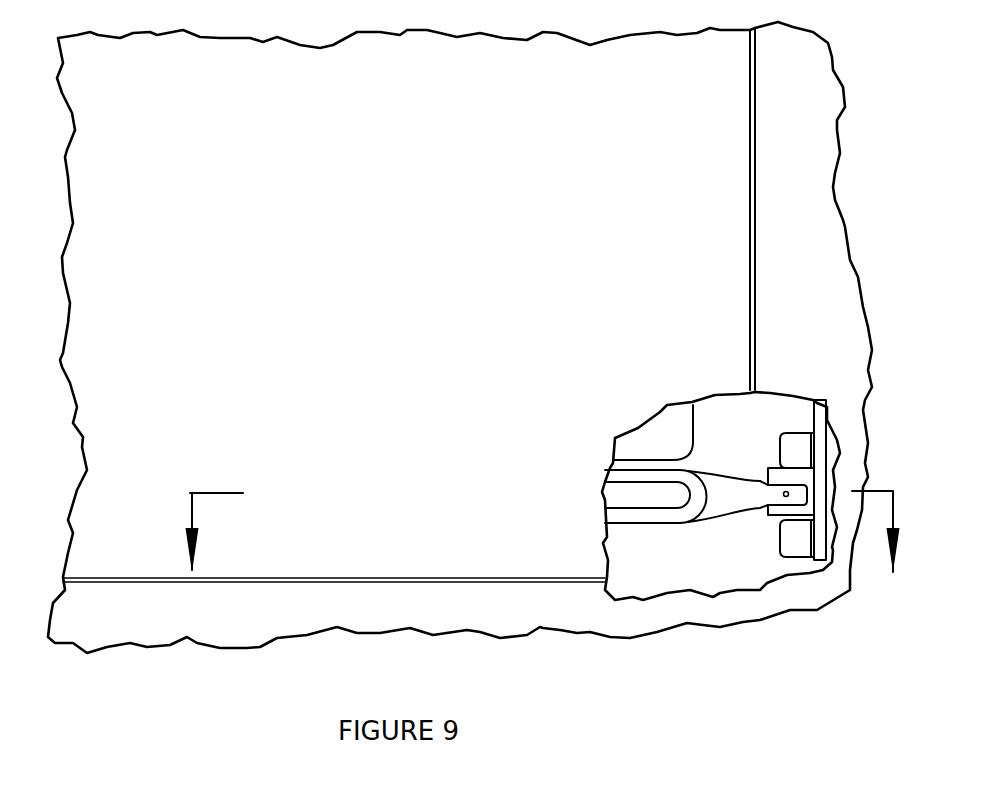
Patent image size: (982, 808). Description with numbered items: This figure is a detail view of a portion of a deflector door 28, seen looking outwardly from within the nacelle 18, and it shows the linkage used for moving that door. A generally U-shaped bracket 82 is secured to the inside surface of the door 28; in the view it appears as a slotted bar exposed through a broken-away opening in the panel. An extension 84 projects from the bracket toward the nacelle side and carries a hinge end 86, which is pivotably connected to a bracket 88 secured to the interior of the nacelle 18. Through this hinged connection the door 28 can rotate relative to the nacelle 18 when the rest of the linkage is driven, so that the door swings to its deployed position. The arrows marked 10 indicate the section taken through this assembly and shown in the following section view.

The section line 10- 10 is at (560, 531).
The nacelle 18 is at (378, 614).
The deflector door 28 is at (411, 518).
The U-shaped bracket 82 is at (640, 523).
The extension 84 is at (760, 479).
The hinge end 86 is at (792, 515).
The bracket 88 is at (791, 468).